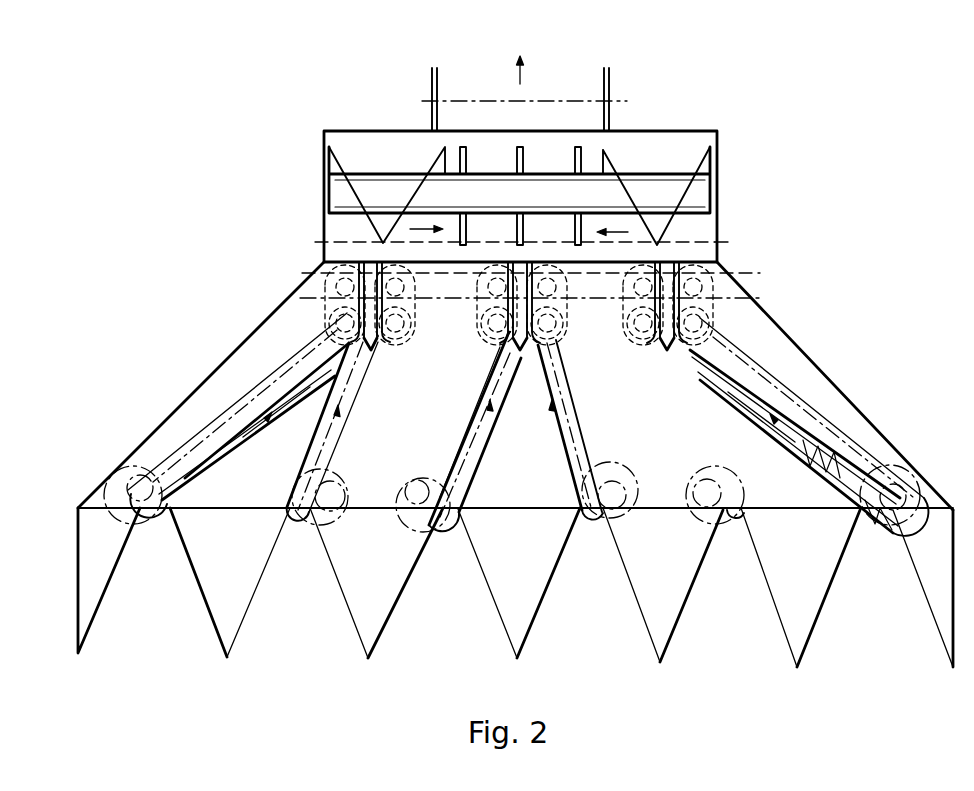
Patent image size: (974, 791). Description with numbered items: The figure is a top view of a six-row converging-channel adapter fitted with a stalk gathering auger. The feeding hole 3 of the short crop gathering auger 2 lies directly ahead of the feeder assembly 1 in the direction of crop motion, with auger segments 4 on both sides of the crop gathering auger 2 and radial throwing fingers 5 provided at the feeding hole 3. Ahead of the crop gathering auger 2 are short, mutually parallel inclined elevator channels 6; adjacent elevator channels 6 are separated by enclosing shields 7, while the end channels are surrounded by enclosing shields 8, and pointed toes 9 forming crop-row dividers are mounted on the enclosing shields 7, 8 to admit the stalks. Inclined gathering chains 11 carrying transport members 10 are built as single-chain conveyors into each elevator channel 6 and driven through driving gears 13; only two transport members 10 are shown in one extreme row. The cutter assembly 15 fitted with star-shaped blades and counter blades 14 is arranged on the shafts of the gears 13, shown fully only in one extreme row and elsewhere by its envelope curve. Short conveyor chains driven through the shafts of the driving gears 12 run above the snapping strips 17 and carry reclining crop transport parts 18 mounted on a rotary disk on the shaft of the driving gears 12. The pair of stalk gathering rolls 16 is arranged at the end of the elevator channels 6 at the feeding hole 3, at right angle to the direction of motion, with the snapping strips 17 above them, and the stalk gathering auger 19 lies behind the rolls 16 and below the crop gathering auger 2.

The feeder assembly 1 is at (590, 113).
The crop gathering auger 2 is at (703, 190).
The feeding hole 3 is at (537, 153).
The auger segments 4 is at (342, 165).
The radial throwing fingers 5 is at (468, 158).
The elevator channels 6 is at (324, 392).
The enclosing shields 7 is at (234, 499).
The enclosing shields 8 is at (226, 372).
The pointed toes 9 is at (224, 626).
The transport members 10 is at (551, 421).
The gathering chains 11 is at (327, 451).
The driving gears 12 is at (345, 322).
The driving gears 13 is at (133, 482).
The counter blades 14 is at (168, 503).
The cutter assembly 15 is at (154, 526).
The pair of stalk gathering rolls 16 is at (746, 279).
The snapping strips 17 is at (318, 247).
The crop transport parts 18 is at (393, 340).
The stalk gathering auger 19 is at (717, 242).